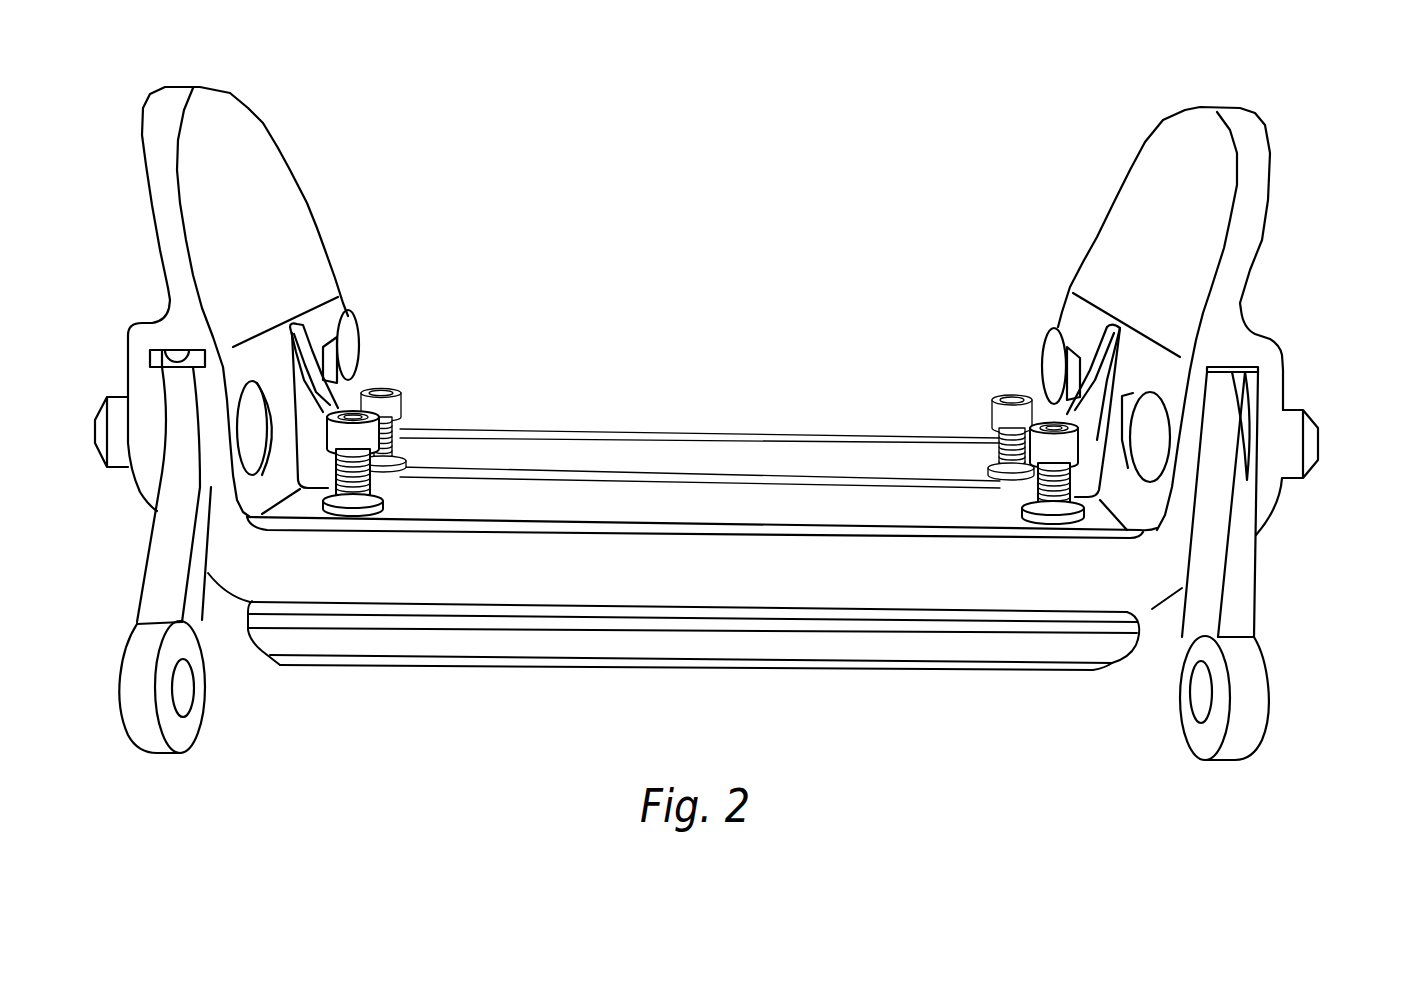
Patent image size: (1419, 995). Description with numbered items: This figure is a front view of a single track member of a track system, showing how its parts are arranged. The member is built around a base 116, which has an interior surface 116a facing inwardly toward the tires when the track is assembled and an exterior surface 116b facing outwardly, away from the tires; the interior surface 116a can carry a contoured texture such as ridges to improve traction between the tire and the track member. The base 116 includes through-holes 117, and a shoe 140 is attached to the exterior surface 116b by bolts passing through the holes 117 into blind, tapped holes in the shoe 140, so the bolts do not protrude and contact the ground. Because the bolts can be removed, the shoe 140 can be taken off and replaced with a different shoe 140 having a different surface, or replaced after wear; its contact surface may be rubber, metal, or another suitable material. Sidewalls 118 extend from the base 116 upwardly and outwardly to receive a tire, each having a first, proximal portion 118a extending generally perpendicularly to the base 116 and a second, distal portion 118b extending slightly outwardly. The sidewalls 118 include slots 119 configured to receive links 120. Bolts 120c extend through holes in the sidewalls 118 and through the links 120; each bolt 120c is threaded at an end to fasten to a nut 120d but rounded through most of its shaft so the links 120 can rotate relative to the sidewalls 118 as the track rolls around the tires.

The base 116 is at (540, 578).
The interior surface 116a is at (598, 517).
The exterior surface 116b is at (433, 608).
The through-holes 117 is at (367, 477).
The sidewalls 118 is at (225, 150).
The proximal portion 118a is at (333, 308).
The distal portion 118b is at (275, 210).
The slots 119 is at (1238, 402).
The links 120 is at (197, 623).
The bolts 120c is at (1148, 407).
The nut 120d is at (1303, 415).
The shoe 140 is at (750, 643).